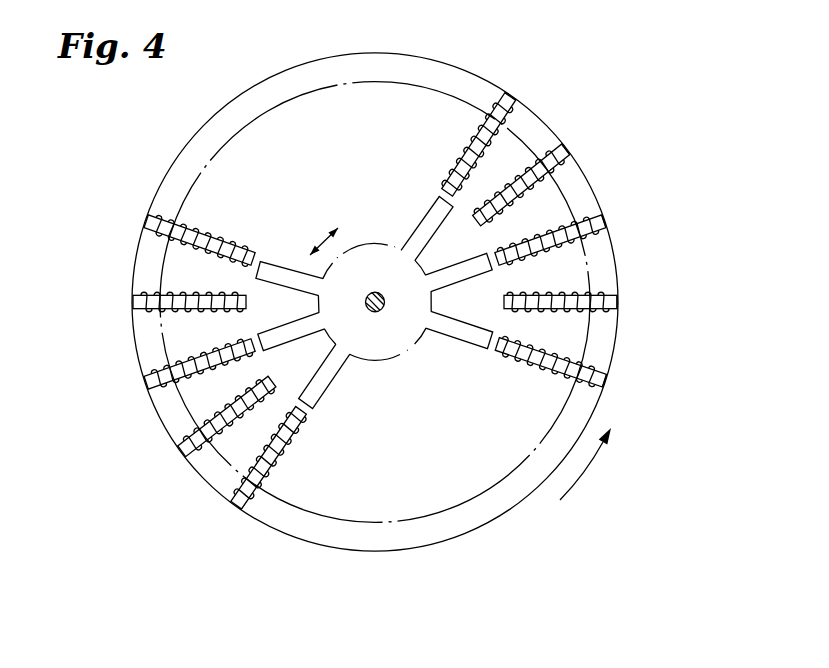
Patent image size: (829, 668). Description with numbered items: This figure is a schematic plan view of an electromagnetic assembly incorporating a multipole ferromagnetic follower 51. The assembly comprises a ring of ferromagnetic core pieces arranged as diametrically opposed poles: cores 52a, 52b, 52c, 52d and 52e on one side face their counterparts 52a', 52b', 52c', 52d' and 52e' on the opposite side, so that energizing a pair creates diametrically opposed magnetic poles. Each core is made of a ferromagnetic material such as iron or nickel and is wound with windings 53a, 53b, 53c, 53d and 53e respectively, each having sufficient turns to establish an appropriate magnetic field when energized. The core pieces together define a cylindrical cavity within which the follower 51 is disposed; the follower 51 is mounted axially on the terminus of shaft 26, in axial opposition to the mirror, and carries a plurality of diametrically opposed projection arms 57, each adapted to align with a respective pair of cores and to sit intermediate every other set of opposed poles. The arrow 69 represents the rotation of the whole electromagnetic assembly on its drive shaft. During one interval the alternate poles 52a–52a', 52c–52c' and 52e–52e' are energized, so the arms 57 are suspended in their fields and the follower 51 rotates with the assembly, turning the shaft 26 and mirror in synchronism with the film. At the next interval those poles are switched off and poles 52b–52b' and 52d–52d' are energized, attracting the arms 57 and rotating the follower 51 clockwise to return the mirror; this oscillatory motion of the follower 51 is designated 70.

The shaft 26 is at (377, 293).
The multipole ferromagnetic follower 51 is at (361, 343).
The follower arms 57 is at (426, 214).
The ferromagnetic core 52a is at (593, 373).
The ferromagnetic core 52b is at (633, 280).
The ferromagnetic core 52c is at (612, 226).
The ferromagnetic core 52d is at (579, 164).
The ferromagnetic core 52e is at (519, 117).
The ferromagnetic core 52a' is at (158, 229).
The ferromagnetic core 52b' is at (142, 307).
The ferromagnetic core 52c' is at (147, 375).
The ferromagnetic core 52d' is at (185, 435).
The ferromagnetic core 52e' is at (238, 486).
The winding 53a is at (606, 374).
The winding 53b is at (616, 291).
The winding 53c is at (598, 216).
The winding 53d is at (559, 152).
The winding 53e is at (498, 100).
The rotation arrow 69 is at (590, 470).
The oscillatory motion of follower 70 is at (325, 240).